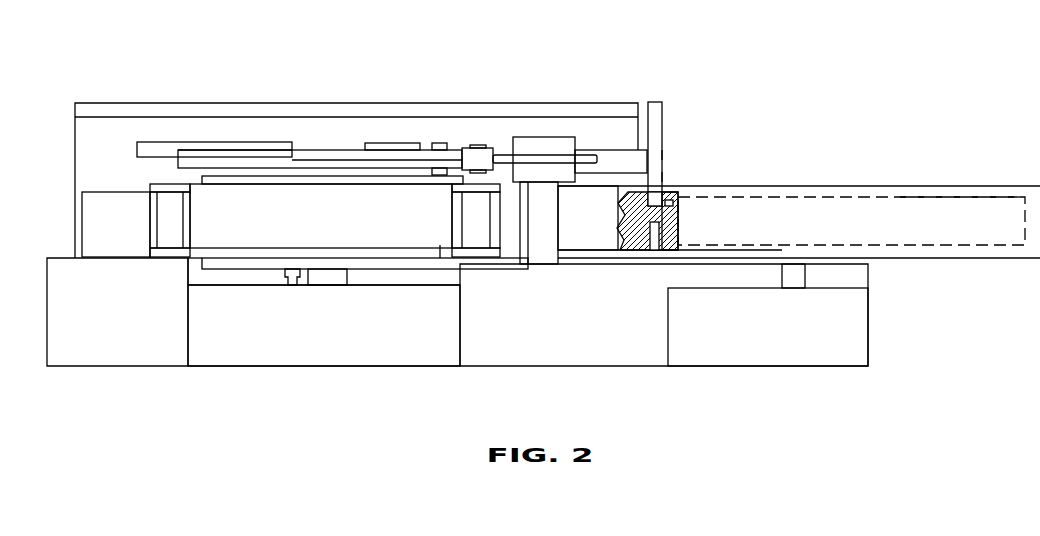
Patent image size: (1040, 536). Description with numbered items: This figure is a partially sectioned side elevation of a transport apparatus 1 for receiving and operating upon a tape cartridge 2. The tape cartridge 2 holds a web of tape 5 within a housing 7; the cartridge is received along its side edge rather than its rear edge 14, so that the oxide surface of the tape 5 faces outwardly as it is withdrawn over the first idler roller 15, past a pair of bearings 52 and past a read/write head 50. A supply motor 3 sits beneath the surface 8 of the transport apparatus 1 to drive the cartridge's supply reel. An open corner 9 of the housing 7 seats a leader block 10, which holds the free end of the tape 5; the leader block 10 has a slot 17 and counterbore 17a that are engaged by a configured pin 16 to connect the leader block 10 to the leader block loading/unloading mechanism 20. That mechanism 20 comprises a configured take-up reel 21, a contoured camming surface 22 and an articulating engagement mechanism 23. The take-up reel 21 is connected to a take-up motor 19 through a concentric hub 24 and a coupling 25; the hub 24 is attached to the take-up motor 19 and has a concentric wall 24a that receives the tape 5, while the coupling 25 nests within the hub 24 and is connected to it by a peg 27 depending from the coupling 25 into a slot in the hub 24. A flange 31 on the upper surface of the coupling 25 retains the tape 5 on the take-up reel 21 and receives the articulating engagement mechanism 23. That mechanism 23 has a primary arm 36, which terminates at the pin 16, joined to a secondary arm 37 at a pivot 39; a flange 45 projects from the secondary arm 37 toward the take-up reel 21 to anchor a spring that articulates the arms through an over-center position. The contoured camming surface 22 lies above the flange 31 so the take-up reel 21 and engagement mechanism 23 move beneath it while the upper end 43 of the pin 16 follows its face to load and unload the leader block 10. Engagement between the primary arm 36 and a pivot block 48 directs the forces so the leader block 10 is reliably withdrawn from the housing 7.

The transport apparatus 1 is at (171, 378).
The tape cartridge 2 is at (1011, 174).
The supply motor 3 is at (749, 323).
The tape 5 is at (833, 234).
The housing 7 is at (970, 253).
The surface 8 is at (590, 263).
The corner 9 is at (678, 174).
The leader block 10 is at (566, 227).
The rear edge 14 is at (908, 230).
The first idler roller 15 is at (543, 245).
The configured pin 16 is at (663, 155).
The slot 17 is at (667, 175).
The counterbore 17a is at (678, 205).
The take-up motor 19 is at (344, 356).
The leader block loading/unloading mechanism 20 is at (496, 125).
The take-up reel 21 is at (193, 270).
The contoured camming surface 22 is at (278, 103).
The articulating engagement mechanism 23 is at (467, 140).
The hub 24 is at (243, 270).
The concentric wall 24a is at (440, 245).
The coupling 25 is at (190, 178).
The peg 27 is at (295, 285).
The flange 31 is at (137, 147).
The primary arm 36 is at (615, 150).
The secondary arm 37 is at (345, 150).
The pivot 39 is at (432, 143).
The upper end 43 is at (663, 110).
The flange 45 is at (245, 150).
The pivot block 48 is at (550, 147).
The read/write head 50 is at (93, 233).
The bearings 52 is at (172, 225).